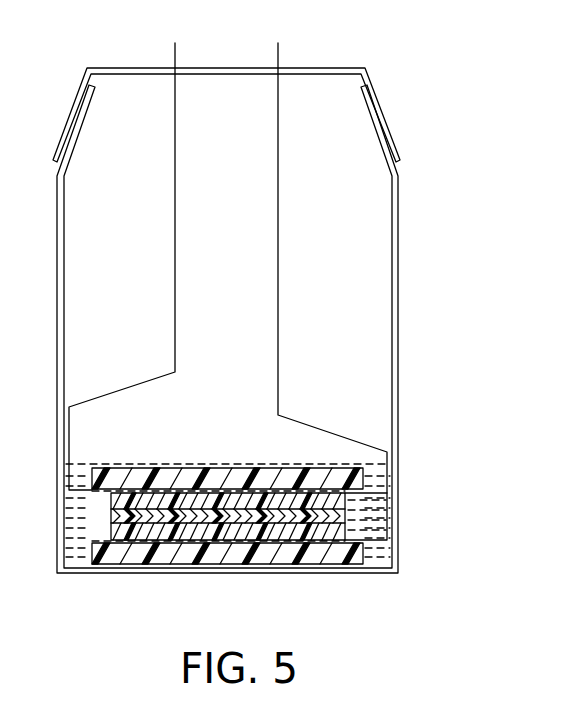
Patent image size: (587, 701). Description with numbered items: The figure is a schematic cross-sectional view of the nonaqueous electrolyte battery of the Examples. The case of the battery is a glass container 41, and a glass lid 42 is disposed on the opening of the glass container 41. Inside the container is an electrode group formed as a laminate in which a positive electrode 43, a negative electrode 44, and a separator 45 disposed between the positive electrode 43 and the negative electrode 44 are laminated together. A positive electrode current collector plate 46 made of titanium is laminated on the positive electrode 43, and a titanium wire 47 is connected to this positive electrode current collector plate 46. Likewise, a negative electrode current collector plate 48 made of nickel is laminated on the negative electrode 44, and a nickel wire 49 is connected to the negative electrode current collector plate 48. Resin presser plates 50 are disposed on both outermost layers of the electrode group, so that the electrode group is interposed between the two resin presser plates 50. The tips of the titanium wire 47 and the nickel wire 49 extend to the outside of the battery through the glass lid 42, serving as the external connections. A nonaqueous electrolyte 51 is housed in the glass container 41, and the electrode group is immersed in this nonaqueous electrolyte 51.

The glass container 41 is at (399, 214).
The glass lid 42 is at (336, 68).
The positive electrode 43 is at (229, 514).
The negative electrode 44 is at (118, 503).
The separator 45 is at (340, 514).
The positive electrode current collector plate 46 is at (343, 540).
The titanium wire 47 is at (278, 333).
The negative electrode current collector plate 48 is at (348, 492).
The nickel wire 49 is at (175, 326).
The resin presser plates 50 is at (363, 473).
The nonaqueous electrolyte 51 is at (83, 473).